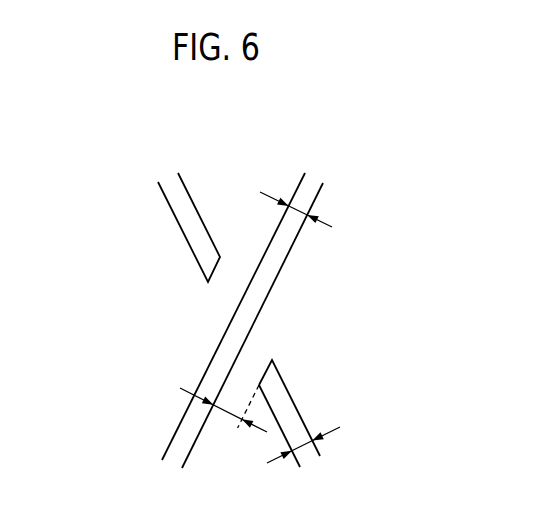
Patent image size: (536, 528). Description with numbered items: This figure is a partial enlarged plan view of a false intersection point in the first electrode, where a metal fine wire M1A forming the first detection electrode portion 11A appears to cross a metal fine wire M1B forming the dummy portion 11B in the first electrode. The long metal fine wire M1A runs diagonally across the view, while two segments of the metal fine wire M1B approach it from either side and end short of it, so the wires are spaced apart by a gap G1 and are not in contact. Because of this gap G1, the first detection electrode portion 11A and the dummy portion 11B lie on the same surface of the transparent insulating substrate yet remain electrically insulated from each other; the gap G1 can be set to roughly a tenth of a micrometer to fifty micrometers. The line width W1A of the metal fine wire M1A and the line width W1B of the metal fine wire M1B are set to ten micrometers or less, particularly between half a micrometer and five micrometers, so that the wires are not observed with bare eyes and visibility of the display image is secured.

The first detection electrode portion 11A is at (341, 181).
The dummy portion in the first electrode 11B is at (142, 182).
The metal fine wire M1A is at (287, 258).
The metal fine wire M1B is at (179, 225).
The line width of the metal fine wire M1A W1A is at (277, 191).
The line width of the metal fine wire M1B W1B is at (332, 436).
The gap G1 is at (223, 425).